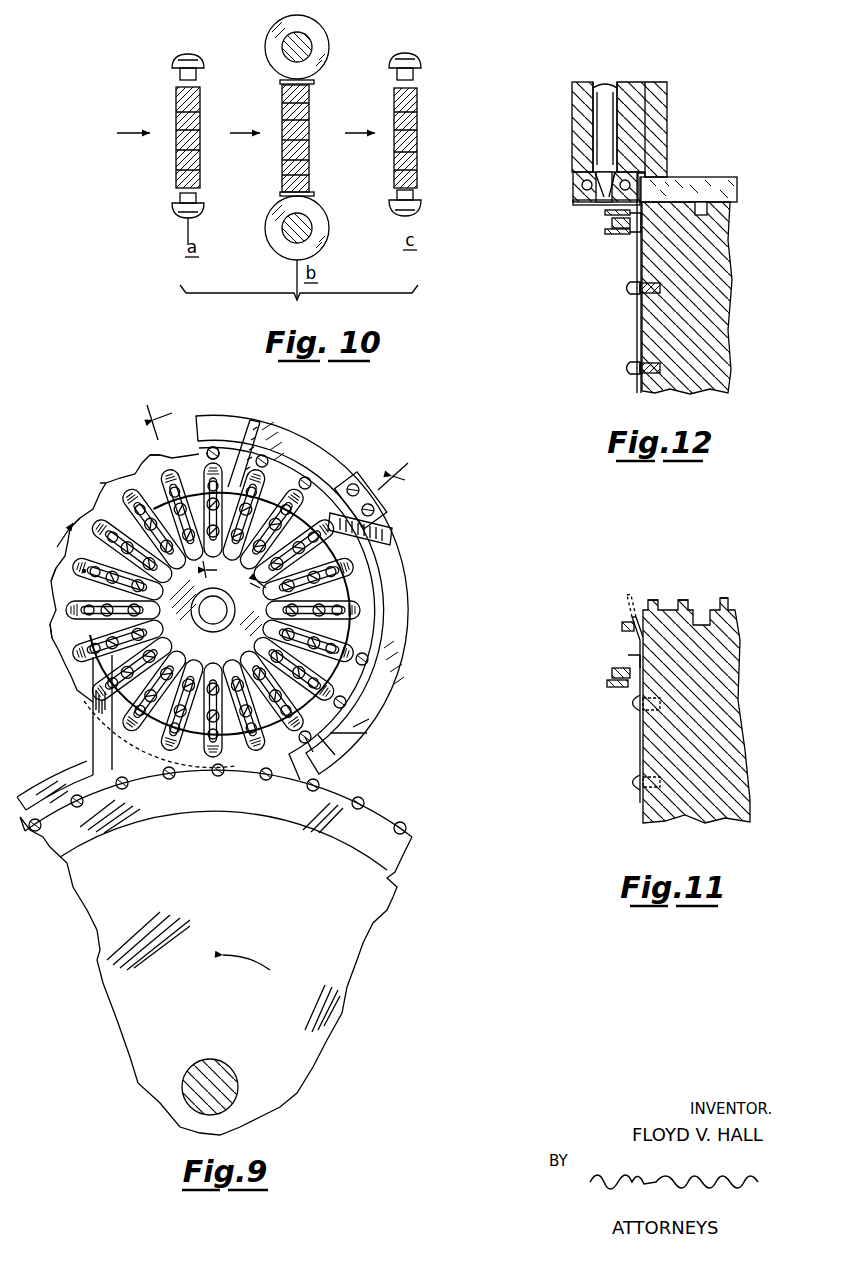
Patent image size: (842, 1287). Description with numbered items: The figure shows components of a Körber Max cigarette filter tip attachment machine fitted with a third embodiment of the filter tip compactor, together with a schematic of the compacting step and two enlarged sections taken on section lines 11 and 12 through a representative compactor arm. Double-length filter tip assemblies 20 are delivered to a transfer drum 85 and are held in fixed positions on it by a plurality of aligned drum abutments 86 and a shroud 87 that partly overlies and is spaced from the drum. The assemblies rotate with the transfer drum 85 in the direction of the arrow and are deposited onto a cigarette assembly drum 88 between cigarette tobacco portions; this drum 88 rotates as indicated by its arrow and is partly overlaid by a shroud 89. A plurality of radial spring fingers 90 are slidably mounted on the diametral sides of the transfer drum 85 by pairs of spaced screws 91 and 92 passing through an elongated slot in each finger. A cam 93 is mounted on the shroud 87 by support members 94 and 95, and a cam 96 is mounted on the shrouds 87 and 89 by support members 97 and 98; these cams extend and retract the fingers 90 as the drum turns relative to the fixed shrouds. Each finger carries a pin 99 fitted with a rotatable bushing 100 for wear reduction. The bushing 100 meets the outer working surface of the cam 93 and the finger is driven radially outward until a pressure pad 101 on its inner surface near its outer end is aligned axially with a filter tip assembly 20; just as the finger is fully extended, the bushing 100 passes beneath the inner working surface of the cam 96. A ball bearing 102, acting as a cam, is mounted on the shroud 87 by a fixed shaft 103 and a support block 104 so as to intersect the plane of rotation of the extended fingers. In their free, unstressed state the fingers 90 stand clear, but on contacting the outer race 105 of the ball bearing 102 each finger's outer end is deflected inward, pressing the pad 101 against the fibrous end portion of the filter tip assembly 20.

In FIG. 10, the section line 11— 11 is at (176, 143).
In FIG. 9, the section line 11— 11 is at (189, 491).
In FIG. 10, the section line 12— 12 is at (282, 148).
In FIG. 9, the section line 12— 12 is at (336, 535).
In FIG. 10, the double-length filter tip assembly 20 is at (417, 158).
In FIG. 12, the double-length filter tip assembly 20 is at (700, 178).
In FIG. 9, the double-length filter tip assembly 20 is at (206, 449).
In FIG. 12, the transfer drum 85 is at (730, 281).
In FIG. 11, the transfer drum 85 is at (738, 675).
In FIG. 9, the transfer drum 85 is at (110, 505).
In FIG. 11, the drum abutments 86 is at (653, 600).
In FIG. 9, the drum abutments 86 is at (113, 485).
In FIG. 12, the shroud 87 is at (660, 128).
In FIG. 9, the shroud 87 is at (308, 445).
In FIG. 9, the cigarette assembly drum 88 is at (377, 900).
In FIG. 9, the shroud 89 is at (56, 780).
In FIG. 12, the radial spring fingers 90 is at (637, 318).
In FIG. 11, the radial spring fingers 90 is at (640, 755).
In FIG. 9, the radial spring fingers 90 is at (100, 524).
In FIG. 10, the screw 91 is at (415, 60).
In FIG. 12, the screw 91 is at (630, 288).
In FIG. 11, the screw 91 is at (630, 706).
In FIG. 9, the screw 91 is at (92, 616).
In FIG. 12, the screw 92 is at (636, 365).
In FIG. 11, the screw 92 is at (636, 786).
In FIG. 9, the screw 92 is at (201, 660).
In FIG. 12, the cam 93 is at (612, 234).
In FIG. 11, the cam 93 is at (607, 684).
In FIG. 9, the cam 93 is at (201, 470).
In FIG. 9, the support member 94 is at (249, 425).
In FIG. 9, the support member 95 is at (392, 534).
In FIG. 12, the cam 96 is at (605, 212).
In FIG. 9, the support member 97 is at (357, 740).
In FIG. 9, the support member 98 is at (93, 727).
In FIG. 12, the pin 99 is at (612, 223).
In FIG. 11, the pin 99 is at (612, 670).
In FIG. 9, the pin 99 is at (70, 575).
In FIG. 12, the rotatable bushing 100 is at (634, 228).
In FIG. 11, the rotatable bushing 100 is at (628, 656).
In FIG. 10, the pressure pad 101 is at (413, 78).
In FIG. 11, the pressure pad 101 is at (622, 626).
In FIG. 10, the ball bearing 102 is at (364, 42).
In FIG. 12, the ball bearing 102 is at (568, 185).
In FIG. 12, the fixed shaft 103 is at (607, 86).
In FIG. 12, the support block 104 is at (578, 110).
In FIG. 9, the support block 104 is at (354, 481).
In FIG. 12, the outer race 105 is at (575, 204).